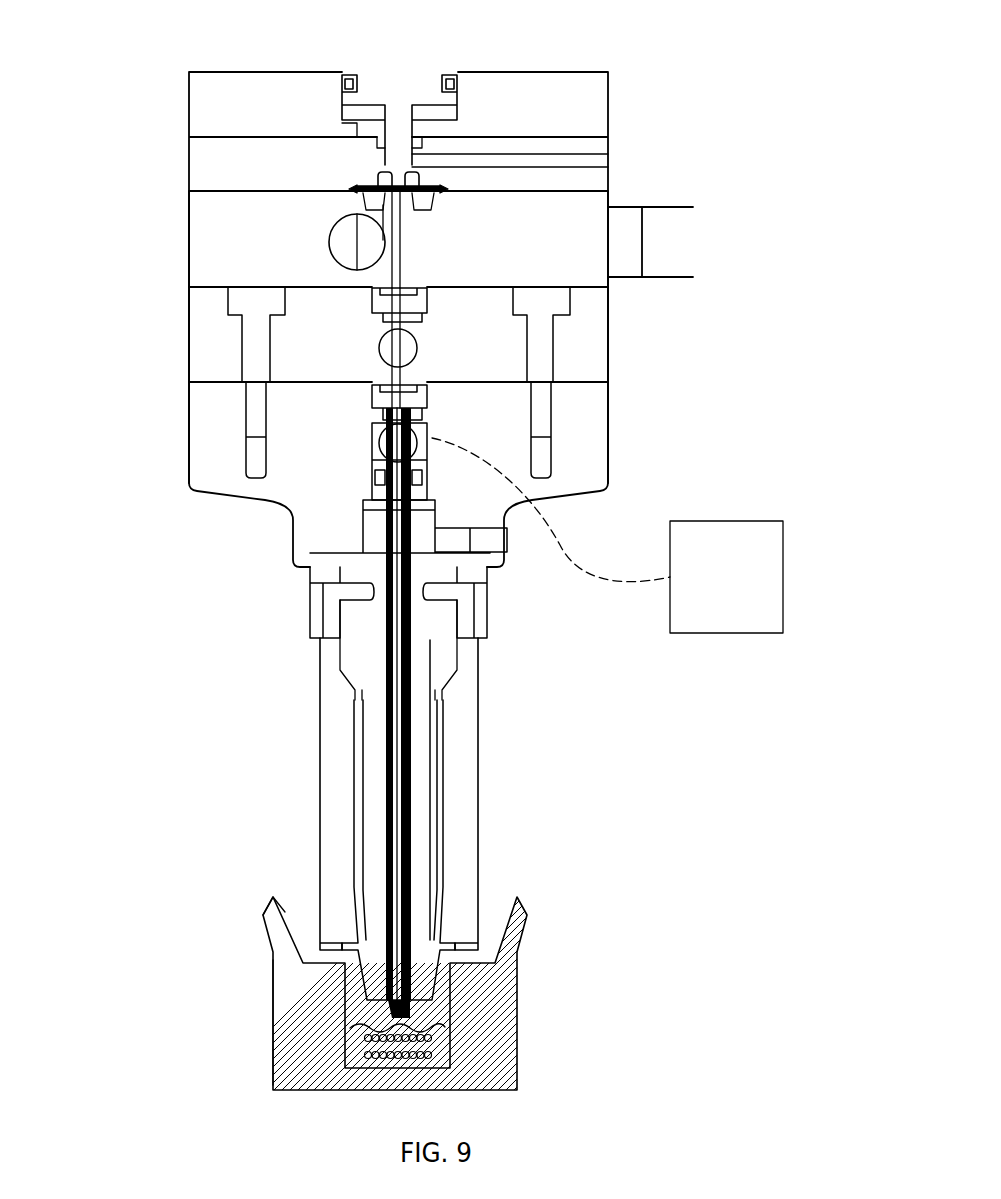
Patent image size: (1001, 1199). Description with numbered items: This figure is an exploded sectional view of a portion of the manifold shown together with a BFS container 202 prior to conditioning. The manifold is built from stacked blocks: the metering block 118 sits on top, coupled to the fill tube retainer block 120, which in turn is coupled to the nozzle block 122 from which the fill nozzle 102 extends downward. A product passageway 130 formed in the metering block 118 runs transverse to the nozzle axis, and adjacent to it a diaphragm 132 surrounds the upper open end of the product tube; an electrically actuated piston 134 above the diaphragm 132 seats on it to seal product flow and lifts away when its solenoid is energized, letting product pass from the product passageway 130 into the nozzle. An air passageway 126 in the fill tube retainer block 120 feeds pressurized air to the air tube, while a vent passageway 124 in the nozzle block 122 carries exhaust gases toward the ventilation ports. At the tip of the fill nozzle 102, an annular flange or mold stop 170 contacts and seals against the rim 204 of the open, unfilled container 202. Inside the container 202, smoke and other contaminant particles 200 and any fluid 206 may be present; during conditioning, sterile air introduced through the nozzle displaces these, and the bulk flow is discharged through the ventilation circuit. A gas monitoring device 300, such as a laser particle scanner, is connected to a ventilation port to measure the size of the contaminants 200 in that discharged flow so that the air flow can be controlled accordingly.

The fill nozzle 102 is at (478, 818).
The metering block 118 is at (190, 225).
The fill tube retainer block 120 is at (190, 353).
The nozzle block 122 is at (215, 467).
The vent passageway 124 is at (427, 428).
The air passageway 126 is at (413, 340).
The product passageway 130 is at (348, 242).
The diaphragm 132 is at (405, 182).
The piston 134 is at (410, 87).
The annular flange (mold stop) 170 is at (460, 945).
The contaminants (smoke and other particles) 200 is at (430, 1057).
The BFS container 202 is at (263, 918).
The rim 204 is at (290, 985).
The fluid 206 is at (445, 1027).
The gas monitoring device 300 is at (685, 521).